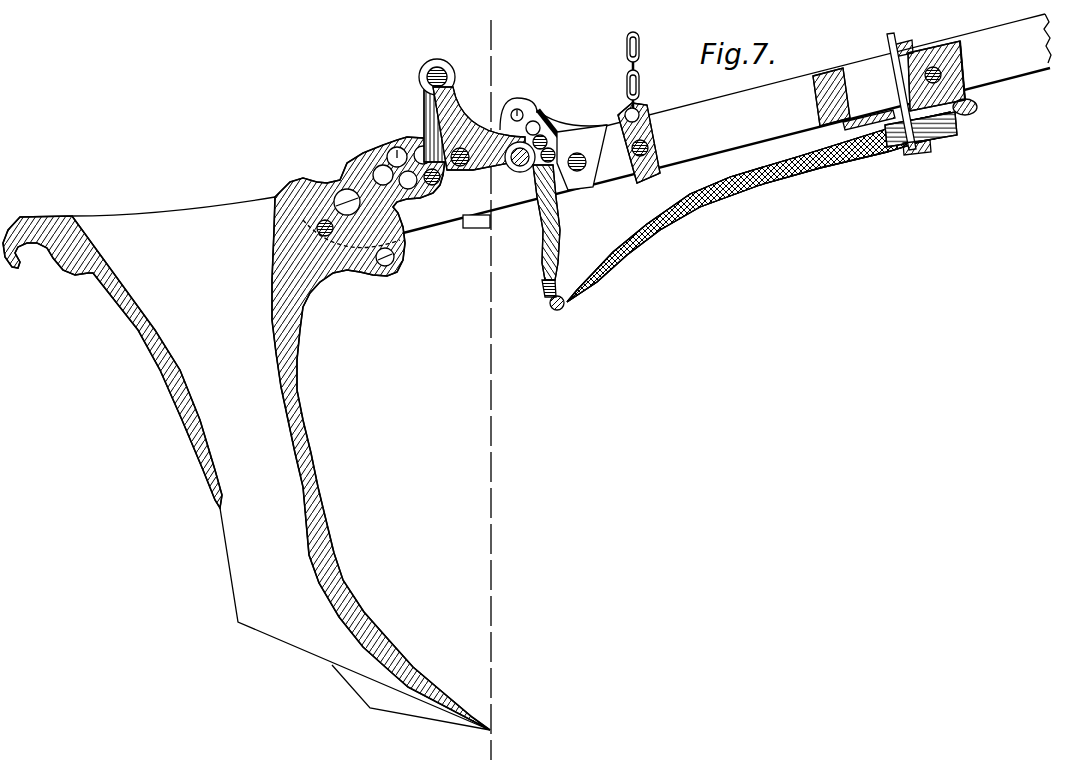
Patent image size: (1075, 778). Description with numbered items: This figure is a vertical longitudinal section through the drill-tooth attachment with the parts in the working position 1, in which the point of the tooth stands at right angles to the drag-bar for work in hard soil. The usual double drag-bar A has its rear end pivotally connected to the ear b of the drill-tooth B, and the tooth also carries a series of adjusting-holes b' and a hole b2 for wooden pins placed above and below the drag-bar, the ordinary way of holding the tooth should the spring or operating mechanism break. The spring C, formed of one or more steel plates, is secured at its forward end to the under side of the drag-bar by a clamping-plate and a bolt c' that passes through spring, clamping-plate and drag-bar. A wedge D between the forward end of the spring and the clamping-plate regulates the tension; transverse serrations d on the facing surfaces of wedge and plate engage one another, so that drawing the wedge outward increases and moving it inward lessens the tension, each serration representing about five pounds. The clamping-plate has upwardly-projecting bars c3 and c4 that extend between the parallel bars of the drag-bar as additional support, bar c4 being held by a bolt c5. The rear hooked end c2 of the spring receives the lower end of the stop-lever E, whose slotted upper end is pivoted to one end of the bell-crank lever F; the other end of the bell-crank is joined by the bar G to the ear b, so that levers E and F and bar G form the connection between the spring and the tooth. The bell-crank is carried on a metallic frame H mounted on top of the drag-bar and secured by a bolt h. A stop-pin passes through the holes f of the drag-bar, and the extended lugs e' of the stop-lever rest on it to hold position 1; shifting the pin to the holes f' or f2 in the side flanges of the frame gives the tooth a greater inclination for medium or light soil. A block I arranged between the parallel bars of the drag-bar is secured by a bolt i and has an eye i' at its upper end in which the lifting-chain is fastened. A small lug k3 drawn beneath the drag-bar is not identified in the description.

The working position 1 is at (496, 390).
The double drag-bar A is at (727, 123).
The drill-tooth B is at (246, 463).
The ear b is at (381, 433).
The adjusting-holes b' is at (393, 139).
The hole b2 is at (403, 260).
The spring C is at (771, 187).
The bolt c' is at (921, 75).
The hooked end c2 is at (562, 303).
The upwardly-projecting bar c3 is at (846, 99).
The upwardly-projecting bar c4 is at (951, 62).
The bolt c5 is at (976, 70).
The wedge D is at (958, 120).
The serrations d is at (977, 106).
The stop-lever E is at (553, 231).
The extended lugs e' is at (548, 127).
The bell-crank lever F is at (484, 129).
The holes f is at (549, 163).
The holes f' is at (554, 121).
The holes f2 is at (517, 97).
The bar G is at (431, 110).
The metallic frame H is at (553, 138).
The bolt h is at (576, 153).
The block I is at (639, 107).
The bolt i is at (653, 148).
The eye i' is at (646, 104).
The bracket lug k3 is at (476, 232).